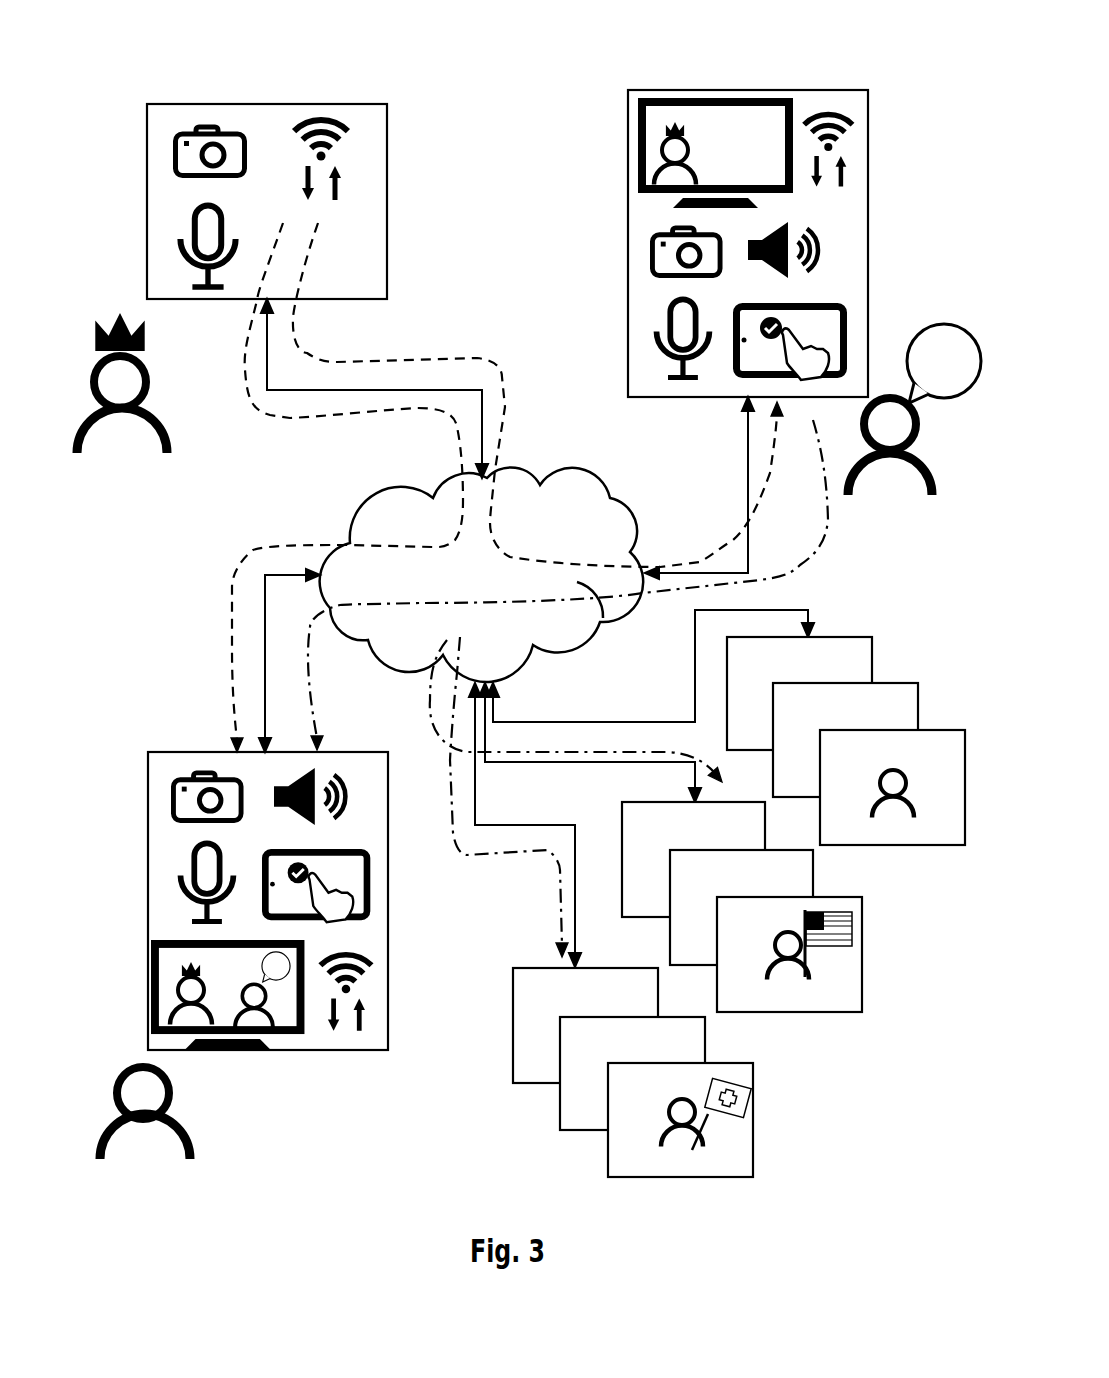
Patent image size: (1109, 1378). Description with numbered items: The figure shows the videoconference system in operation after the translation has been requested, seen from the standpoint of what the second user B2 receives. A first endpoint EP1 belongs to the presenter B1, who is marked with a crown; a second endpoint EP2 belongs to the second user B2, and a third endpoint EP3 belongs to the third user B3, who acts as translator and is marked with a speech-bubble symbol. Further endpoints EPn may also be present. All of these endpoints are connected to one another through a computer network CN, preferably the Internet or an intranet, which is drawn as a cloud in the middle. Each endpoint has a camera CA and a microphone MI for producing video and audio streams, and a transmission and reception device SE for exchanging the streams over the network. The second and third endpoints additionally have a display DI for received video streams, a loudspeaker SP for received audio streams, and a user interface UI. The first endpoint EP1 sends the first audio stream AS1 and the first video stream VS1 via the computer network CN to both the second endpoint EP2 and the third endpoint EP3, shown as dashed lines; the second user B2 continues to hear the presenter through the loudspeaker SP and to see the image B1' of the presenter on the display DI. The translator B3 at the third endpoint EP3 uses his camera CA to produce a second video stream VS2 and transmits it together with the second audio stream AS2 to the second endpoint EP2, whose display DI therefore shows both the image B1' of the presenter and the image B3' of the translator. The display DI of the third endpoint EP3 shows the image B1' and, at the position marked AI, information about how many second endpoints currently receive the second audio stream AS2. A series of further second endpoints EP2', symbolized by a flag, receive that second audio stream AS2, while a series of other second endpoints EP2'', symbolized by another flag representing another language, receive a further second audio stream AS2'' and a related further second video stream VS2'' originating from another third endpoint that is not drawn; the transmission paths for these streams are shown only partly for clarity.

The first endpoint EP1 is at (175, 298).
The second endpoint EP2 is at (268, 949).
The third endpoint EP3 is at (653, 397).
The further endpoints EPn is at (900, 862).
The further second endpoints EP2' is at (759, 965).
The other second endpoints EP2'' is at (661, 1110).
The camera CA is at (161, 790).
The transmission and reception device SE is at (421, 1050).
The microphone MI is at (167, 871).
The loudspeaker SP is at (350, 803).
The user interface UI is at (372, 881).
The display DI is at (438, 574).
The displayed information AI is at (750, 127).
The computer network CN is at (407, 518).
The first user B1 is at (122, 423).
The second user B2 is at (124, 1133).
The third user B3 is at (914, 443).
The image of the presenter B1' is at (433, 566).
The image of the translator B3' is at (272, 1041).
The first audio stream AS1 is at (494, 487).
The first video stream VS1 is at (293, 418).
The second audio stream AS2 is at (636, 601).
The second video stream VS2 is at (636, 601).
The further second audio stream AS2'' is at (501, 818).
The further second video stream VS2'' is at (501, 818).